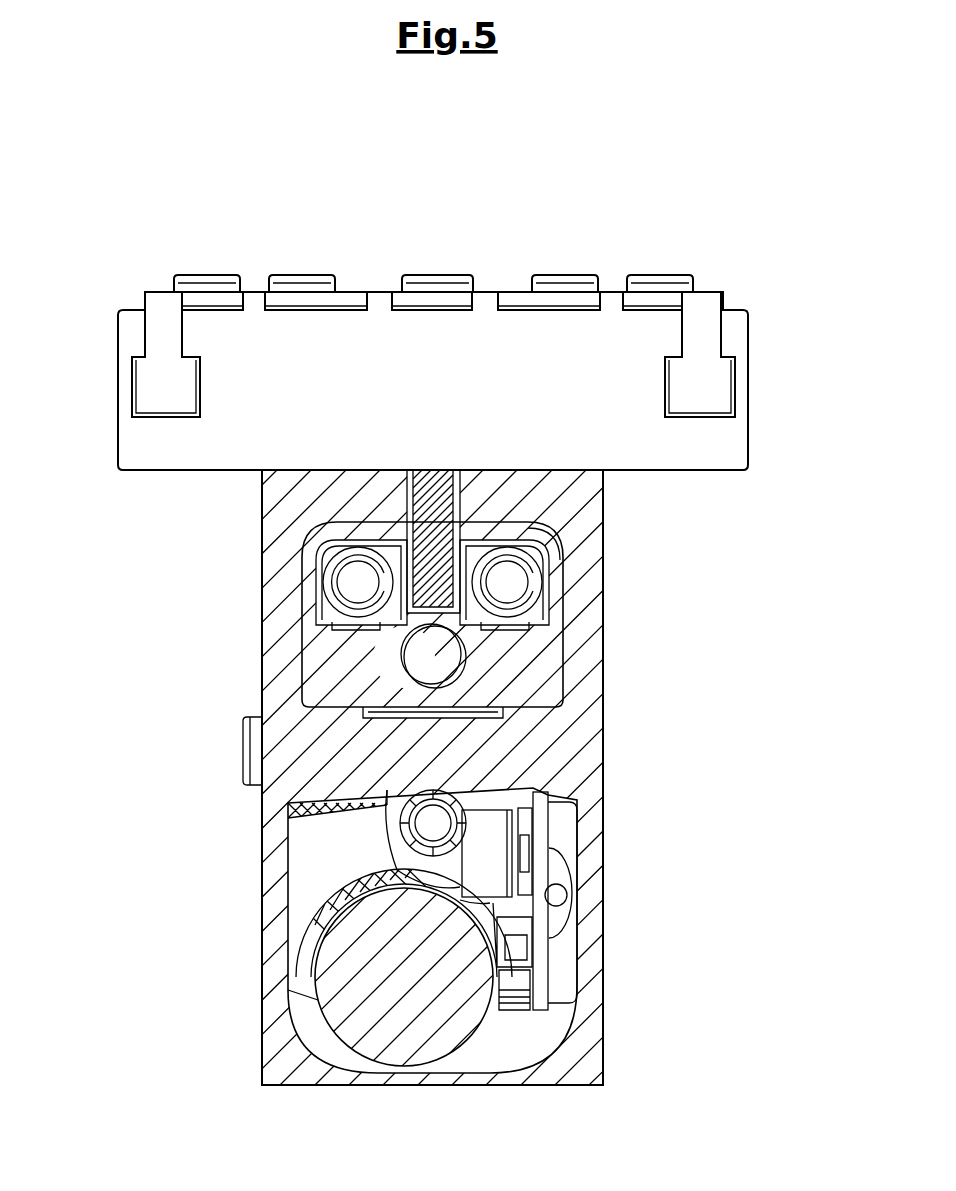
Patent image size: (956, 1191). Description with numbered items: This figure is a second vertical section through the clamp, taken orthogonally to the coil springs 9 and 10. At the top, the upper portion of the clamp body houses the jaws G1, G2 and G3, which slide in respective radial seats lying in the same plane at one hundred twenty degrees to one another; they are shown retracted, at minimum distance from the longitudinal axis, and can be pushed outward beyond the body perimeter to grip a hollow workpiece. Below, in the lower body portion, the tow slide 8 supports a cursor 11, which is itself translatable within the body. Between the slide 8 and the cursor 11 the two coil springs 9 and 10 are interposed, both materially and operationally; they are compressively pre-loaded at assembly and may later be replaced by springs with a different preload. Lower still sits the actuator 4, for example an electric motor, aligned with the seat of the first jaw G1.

The jaw G1 is at (438, 287).
The jaw G2 is at (148, 372).
The jaw G3 is at (718, 385).
The actuator 4 is at (410, 1030).
The tow slide 8 is at (543, 663).
The coil spring 9 is at (533, 597).
The coil spring 10 is at (330, 580).
The cursor 11 is at (550, 527).